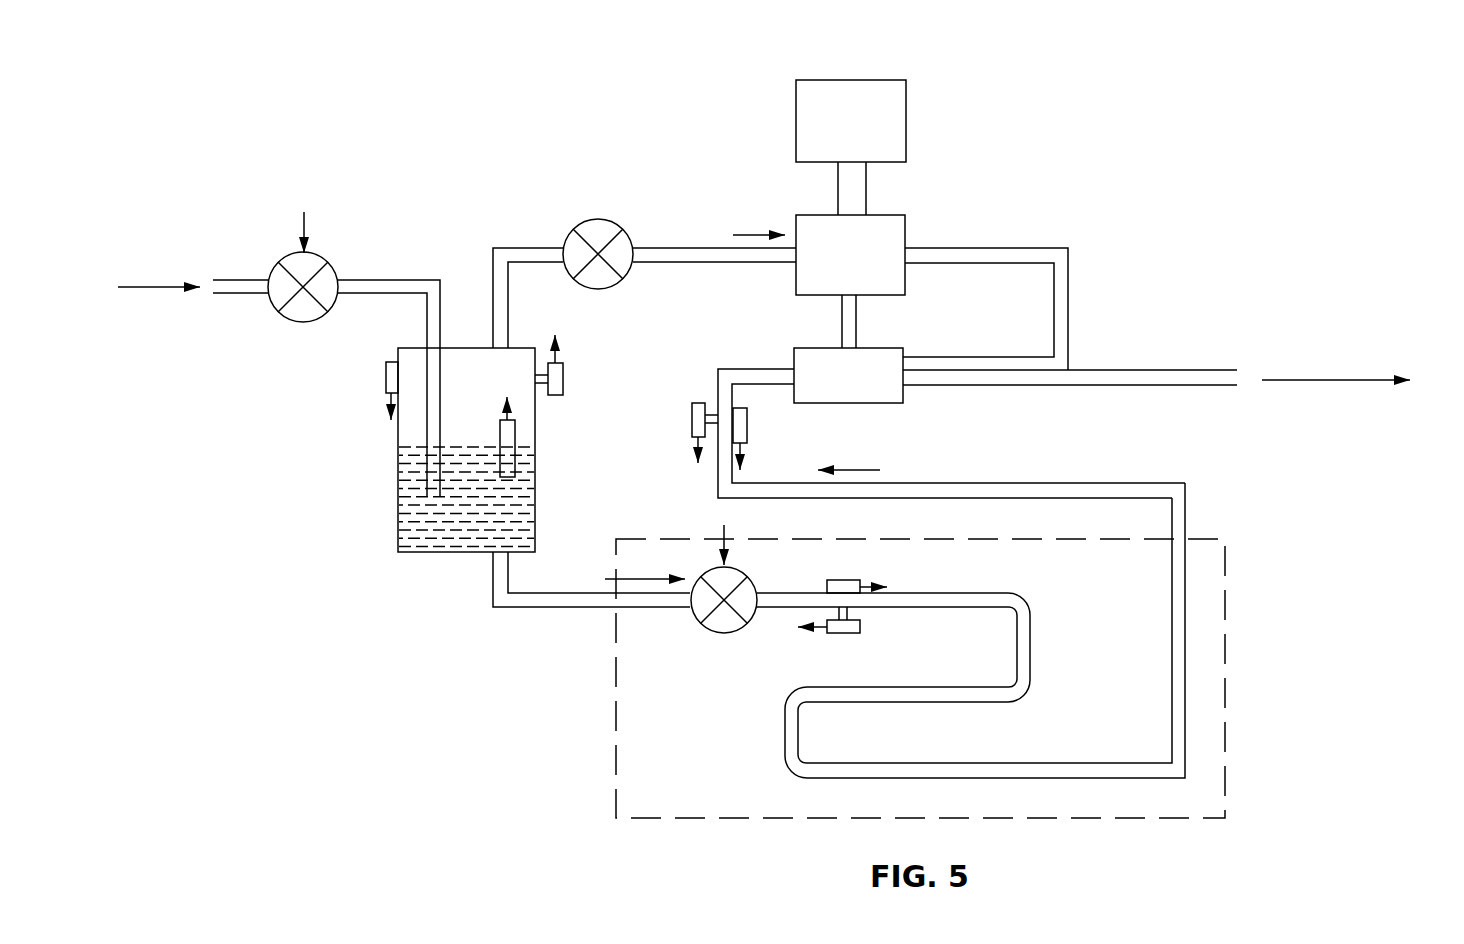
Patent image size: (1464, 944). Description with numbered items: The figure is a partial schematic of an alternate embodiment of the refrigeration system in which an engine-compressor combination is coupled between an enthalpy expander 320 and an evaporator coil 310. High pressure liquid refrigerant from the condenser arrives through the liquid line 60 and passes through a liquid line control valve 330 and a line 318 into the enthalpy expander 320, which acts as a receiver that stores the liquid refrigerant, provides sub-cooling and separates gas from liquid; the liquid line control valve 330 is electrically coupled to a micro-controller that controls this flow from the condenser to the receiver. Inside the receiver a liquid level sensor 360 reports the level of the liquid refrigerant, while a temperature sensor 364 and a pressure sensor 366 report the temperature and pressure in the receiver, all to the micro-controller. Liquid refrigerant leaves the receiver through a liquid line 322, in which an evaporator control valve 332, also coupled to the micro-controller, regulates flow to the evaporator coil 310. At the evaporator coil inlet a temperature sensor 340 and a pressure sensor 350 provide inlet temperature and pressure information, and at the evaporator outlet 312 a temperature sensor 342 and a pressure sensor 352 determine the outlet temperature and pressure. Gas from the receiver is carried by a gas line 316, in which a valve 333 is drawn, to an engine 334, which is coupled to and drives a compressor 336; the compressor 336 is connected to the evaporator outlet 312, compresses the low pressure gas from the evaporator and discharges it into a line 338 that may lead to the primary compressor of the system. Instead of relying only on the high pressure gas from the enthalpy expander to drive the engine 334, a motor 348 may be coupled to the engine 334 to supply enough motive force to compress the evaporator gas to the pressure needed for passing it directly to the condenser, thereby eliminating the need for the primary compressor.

The liquid line 60 is at (225, 296).
The liquid line control valve 330 is at (317, 255).
The line 318 is at (402, 278).
The enthalpy expander 320 is at (398, 500).
The pressure sensor 366 is at (386, 370).
The temperature sensor 364 is at (563, 380).
The liquid level sensor 360 is at (516, 450).
The gas line 316 is at (663, 247).
The gas control valve 333 is at (577, 227).
The motor 348 is at (842, 80).
The engine 334 is at (885, 215).
The compressor 336 is at (887, 348).
The line 338 is at (1120, 370).
The evaporator outlet 312 is at (742, 368).
The pressure sensor 352 is at (698, 403).
The temperature sensor 342 is at (747, 427).
The liquid line 322 is at (547, 610).
The evaporator control valve 332 is at (740, 570).
The temperature sensor 340 is at (843, 580).
The pressure sensor 350 is at (843, 633).
The evaporator coil 310 is at (1185, 738).